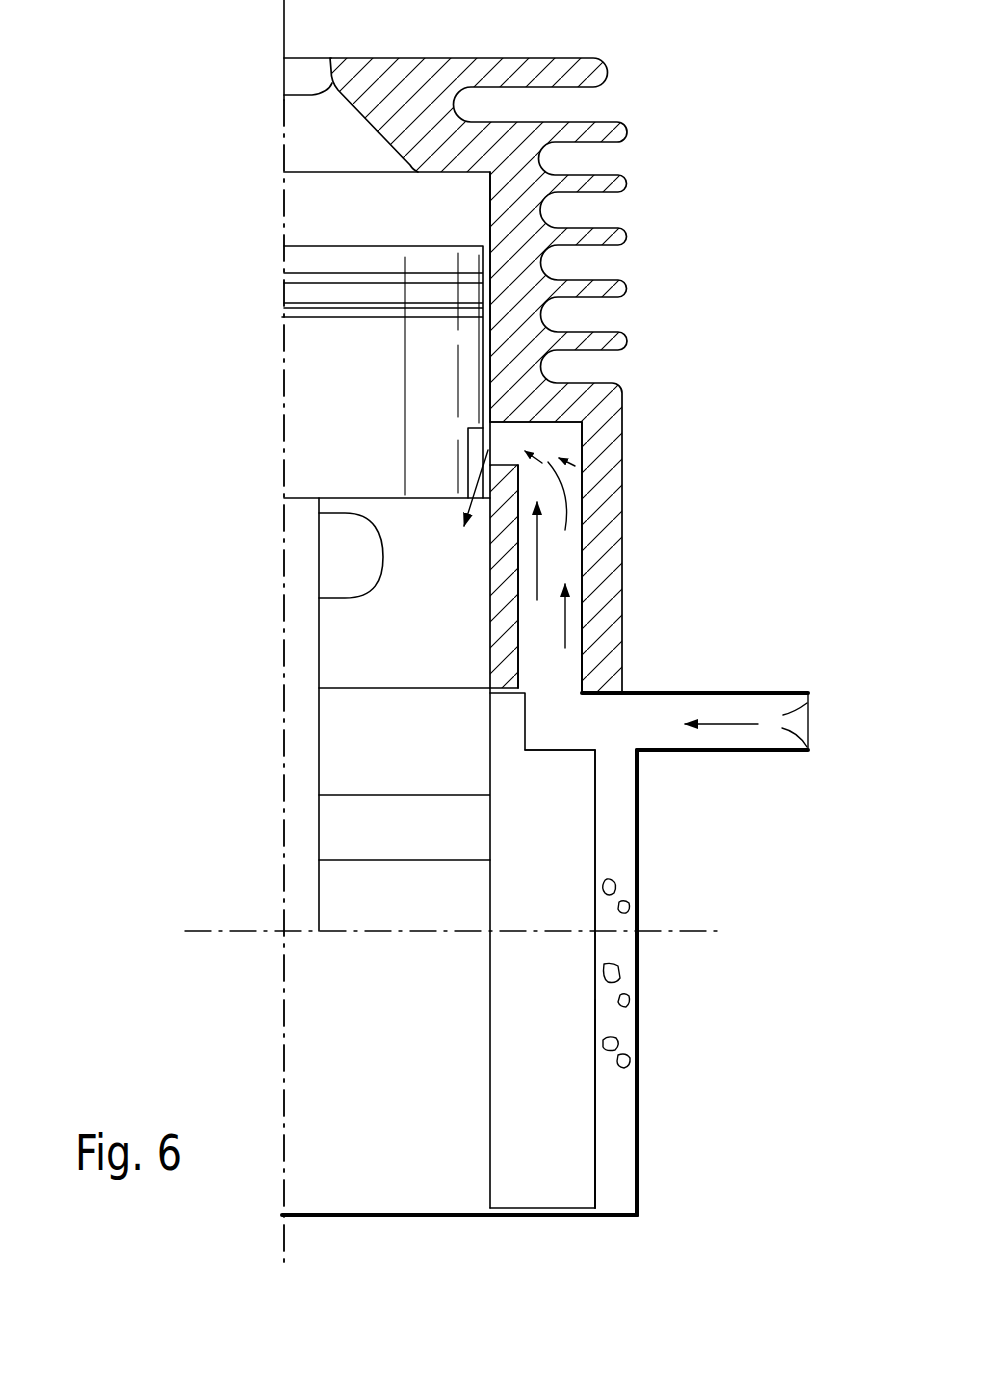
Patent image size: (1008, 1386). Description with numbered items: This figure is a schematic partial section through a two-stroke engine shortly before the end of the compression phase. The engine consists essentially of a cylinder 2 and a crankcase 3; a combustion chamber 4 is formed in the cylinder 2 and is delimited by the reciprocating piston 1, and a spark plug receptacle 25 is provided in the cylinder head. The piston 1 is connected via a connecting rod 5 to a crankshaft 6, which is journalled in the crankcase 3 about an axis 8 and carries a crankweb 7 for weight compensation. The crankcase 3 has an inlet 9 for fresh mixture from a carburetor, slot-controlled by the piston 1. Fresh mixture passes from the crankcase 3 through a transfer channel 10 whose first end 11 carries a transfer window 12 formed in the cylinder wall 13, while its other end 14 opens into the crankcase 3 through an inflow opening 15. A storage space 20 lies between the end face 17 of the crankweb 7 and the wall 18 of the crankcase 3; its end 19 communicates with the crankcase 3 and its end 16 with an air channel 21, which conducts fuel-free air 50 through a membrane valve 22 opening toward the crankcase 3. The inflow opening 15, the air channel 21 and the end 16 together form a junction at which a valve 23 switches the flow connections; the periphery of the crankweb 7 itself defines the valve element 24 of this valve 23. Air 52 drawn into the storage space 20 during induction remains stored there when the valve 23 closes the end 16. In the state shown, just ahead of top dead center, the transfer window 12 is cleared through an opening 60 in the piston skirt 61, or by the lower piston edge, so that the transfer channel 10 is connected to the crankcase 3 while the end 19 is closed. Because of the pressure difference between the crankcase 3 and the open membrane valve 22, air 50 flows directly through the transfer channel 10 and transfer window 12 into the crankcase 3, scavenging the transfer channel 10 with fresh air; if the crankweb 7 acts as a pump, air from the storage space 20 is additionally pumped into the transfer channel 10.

The piston 1 is at (290, 363).
The cylinder 2 is at (545, 168).
The crankcase 3 is at (300, 1050).
The combustion chamber 4 is at (303, 203).
The connecting rod 5 is at (292, 633).
The crankshaft 6 is at (381, 913).
The crankweb 7 is at (582, 1033).
The axis 8 is at (203, 930).
The inlet 9 is at (332, 562).
The transfer channel 10 is at (552, 563).
The first end 11 is at (573, 465).
The transfer window 12 is at (495, 430).
The cylinder wall 13 is at (494, 204).
The other end 14 is at (548, 667).
The inflow opening 15 is at (556, 685).
The end of storage space 16 is at (616, 771).
The end face 17 is at (598, 868).
The wall 18 is at (637, 967).
The end of storage space 19 is at (586, 1191).
The storage space 20 is at (618, 1090).
The air channel 21 is at (692, 708).
The membrane valve 22 is at (802, 722).
The valve 23 is at (572, 728).
The valve element 24 is at (502, 713).
The receptacle 25 is at (295, 75).
The air 50 is at (490, 565).
The air 52 is at (631, 905).
The opening 60 is at (470, 445).
The piston skirt 61 is at (293, 430).